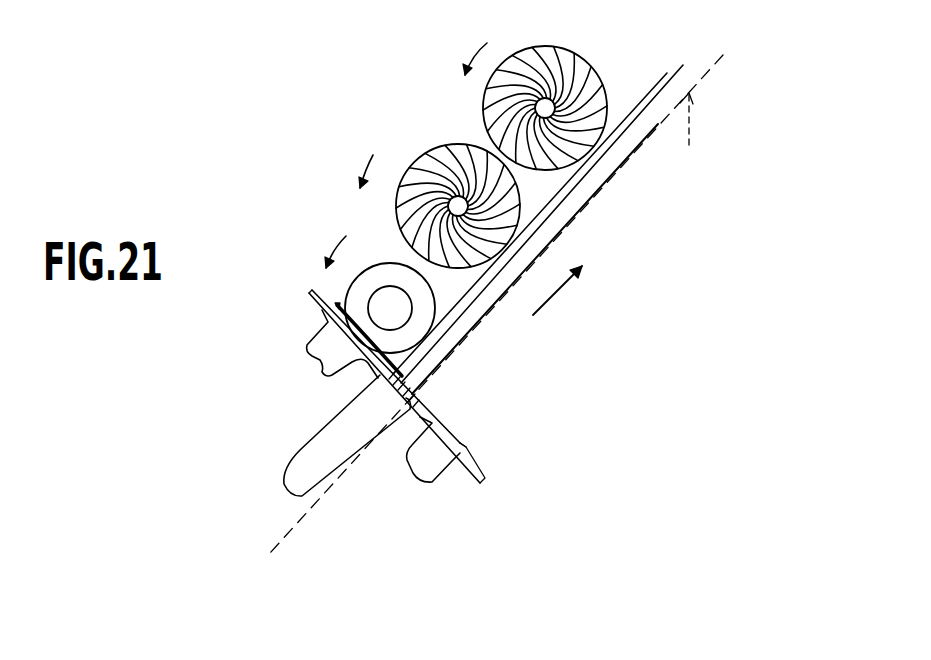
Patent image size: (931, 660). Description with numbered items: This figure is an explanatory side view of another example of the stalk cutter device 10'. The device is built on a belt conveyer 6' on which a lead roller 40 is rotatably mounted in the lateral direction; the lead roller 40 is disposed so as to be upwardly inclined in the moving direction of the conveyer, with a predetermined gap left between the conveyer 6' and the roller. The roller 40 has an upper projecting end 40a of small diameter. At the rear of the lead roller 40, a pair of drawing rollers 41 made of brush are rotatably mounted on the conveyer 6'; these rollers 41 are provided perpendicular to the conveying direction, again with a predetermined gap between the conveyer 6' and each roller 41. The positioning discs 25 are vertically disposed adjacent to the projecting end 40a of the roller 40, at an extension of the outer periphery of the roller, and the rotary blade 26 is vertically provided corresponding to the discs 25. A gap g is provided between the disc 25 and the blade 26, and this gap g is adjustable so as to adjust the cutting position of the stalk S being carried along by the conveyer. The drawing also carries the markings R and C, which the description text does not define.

The drawing rollers 41 is at (483, 107).
The lead roller 40 is at (353, 285).
The upper projecting end 40a is at (400, 310).
The positioning discs 25 is at (318, 358).
The rotary blade 26 is at (442, 415).
The gap g is at (466, 447).
The stalk S is at (583, 183).
The belt conveyer 6' is at (691, 132).
The stalk cutter device 10' is at (383, 522).
The radius R is at (305, 480).
The carrier body C is at (253, 438).